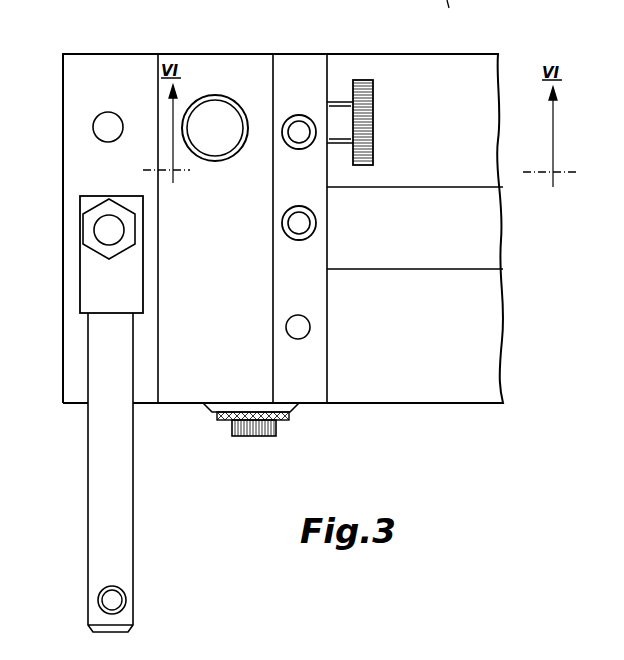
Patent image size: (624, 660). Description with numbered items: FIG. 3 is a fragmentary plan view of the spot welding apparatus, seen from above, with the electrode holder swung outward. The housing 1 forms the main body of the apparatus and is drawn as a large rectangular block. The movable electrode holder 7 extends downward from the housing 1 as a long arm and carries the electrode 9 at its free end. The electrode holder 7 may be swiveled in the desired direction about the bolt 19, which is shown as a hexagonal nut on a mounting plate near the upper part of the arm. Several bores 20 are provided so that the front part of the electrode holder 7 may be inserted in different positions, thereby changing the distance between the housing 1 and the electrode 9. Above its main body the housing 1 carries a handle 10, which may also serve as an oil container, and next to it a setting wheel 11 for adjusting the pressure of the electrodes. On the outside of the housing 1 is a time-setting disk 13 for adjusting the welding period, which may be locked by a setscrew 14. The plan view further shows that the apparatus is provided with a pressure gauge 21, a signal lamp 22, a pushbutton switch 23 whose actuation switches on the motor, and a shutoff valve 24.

The housing 1 is at (478, 402).
The electrode holder 7 is at (98, 503).
The electrode 9 is at (98, 605).
The handle 10 is at (493, 261).
The setting wheel 11 is at (363, 92).
The time-setting disk 13 is at (303, 415).
The setscrew 14 is at (258, 438).
The bolt 19 is at (105, 238).
The bore 20 is at (102, 127).
The pressure gauge 21 is at (212, 118).
The signal lamp 22 is at (309, 330).
The pushbutton switch 23 is at (300, 126).
The shutoff valve 24 is at (314, 226).